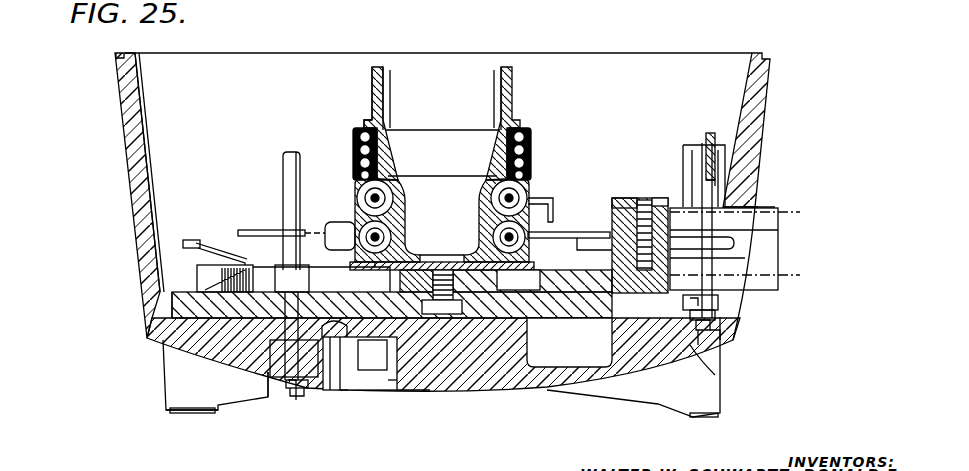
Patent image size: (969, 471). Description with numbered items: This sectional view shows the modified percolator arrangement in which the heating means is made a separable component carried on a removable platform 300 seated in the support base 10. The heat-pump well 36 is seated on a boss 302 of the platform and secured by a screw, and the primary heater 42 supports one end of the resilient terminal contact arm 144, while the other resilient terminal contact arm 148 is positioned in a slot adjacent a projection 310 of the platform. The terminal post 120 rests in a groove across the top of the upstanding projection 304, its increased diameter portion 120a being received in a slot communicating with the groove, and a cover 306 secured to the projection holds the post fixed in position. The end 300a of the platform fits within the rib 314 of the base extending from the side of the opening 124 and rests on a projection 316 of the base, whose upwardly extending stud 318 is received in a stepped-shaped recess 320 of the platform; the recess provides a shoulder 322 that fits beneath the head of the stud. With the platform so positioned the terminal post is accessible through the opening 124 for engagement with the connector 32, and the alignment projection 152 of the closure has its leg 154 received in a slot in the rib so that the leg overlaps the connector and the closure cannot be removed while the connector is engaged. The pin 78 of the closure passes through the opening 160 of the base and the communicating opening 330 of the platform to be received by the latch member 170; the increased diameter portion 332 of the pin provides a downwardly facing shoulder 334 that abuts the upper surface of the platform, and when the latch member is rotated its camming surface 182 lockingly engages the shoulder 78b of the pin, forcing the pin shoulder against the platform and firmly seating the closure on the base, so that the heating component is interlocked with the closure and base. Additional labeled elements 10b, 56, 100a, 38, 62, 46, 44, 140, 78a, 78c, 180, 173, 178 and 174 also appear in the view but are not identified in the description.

The support base 10 is at (782, 76).
The lower housing portion 10b is at (658, 404).
The housing rim 56 is at (120, 53).
The housing liner 100a is at (130, 168).
The opening 160 is at (178, 320).
The downwardly facing shoulder 334 is at (178, 304).
The heat-pump well 36 is at (568, 90).
The cup wall 38 is at (382, 88).
The cup flange 62 is at (370, 118).
The left bearing 46 is at (353, 151).
The right bearing 44 is at (533, 143).
The primary heater 42 is at (523, 192).
The pin 78 is at (293, 152).
The increased diameter portion 332 is at (285, 268).
The projection 310 is at (196, 272).
The opening 330 is at (318, 290).
The resilient terminal contact arm 148 is at (192, 240).
The resilient terminal contact arm 144 is at (245, 230).
The latch member 170 is at (376, 390).
The boss 302 is at (498, 282).
The upstanding projection 304 is at (617, 279).
The cover 306 is at (643, 196).
The increased diameter portion 120a is at (620, 199).
The bracket 140 is at (560, 232).
The terminal post 120 is at (763, 230).
The connector 32 is at (770, 243).
The opening 124 is at (757, 207).
The rib 314 is at (690, 142).
The alignment projection 152 is at (712, 132).
The leg 154 is at (714, 184).
The stud 318 is at (720, 305).
The end of platform 300a is at (716, 318).
The platform 300 is at (577, 318).
The stepped-shaped recess 320 is at (690, 350).
The projection 316 is at (698, 345).
The shoulder 322 is at (717, 337).
The rod collar 78a is at (240, 332).
The tray wall 180 is at (268, 372).
The camming surface 182 is at (268, 397).
The rod end cap 78c is at (286, 397).
The shoulder 78b is at (297, 400).
The fastener 173 is at (342, 392).
The fastener 178 is at (388, 386).
The plate 174 is at (425, 389).